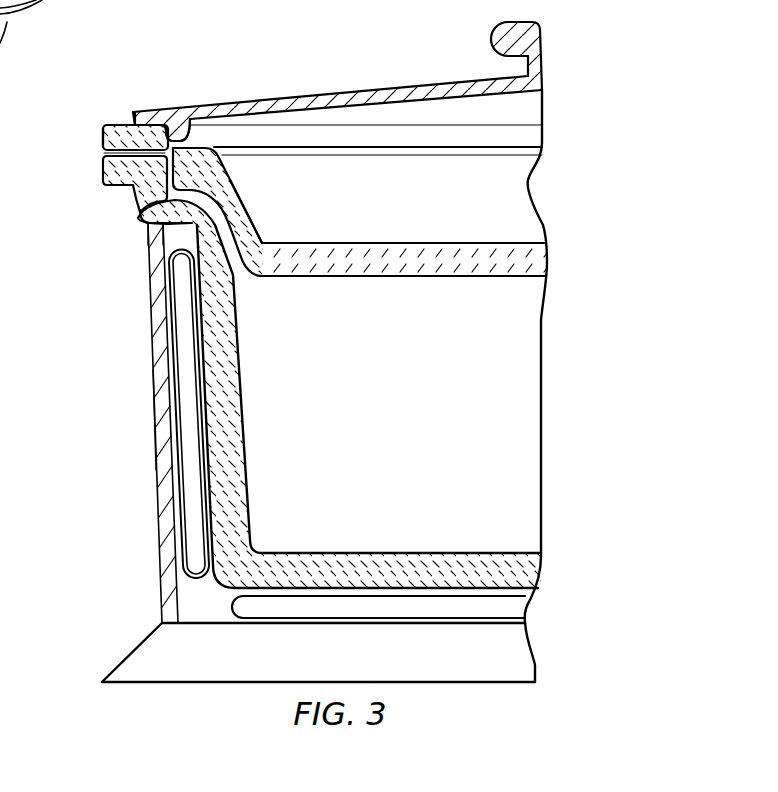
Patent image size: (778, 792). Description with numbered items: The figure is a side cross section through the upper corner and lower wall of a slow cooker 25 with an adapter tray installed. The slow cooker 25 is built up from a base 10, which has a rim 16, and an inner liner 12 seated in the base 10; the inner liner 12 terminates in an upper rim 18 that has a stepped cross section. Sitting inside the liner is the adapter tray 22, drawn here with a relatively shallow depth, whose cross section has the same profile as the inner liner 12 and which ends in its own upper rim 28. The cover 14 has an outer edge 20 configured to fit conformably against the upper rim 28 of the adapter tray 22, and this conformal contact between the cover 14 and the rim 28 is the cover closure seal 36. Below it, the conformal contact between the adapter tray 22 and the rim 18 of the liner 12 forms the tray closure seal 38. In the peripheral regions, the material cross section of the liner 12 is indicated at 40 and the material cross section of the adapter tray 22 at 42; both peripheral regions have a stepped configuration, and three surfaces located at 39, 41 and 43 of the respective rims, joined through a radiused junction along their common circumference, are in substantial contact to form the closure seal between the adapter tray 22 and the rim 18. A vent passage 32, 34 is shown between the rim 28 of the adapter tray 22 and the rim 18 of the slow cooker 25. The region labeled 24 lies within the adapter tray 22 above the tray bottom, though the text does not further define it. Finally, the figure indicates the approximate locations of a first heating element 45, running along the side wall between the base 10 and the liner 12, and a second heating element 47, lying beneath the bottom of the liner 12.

The base 10 is at (156, 479).
The inner liner 12 is at (241, 397).
The cover 14 is at (343, 92).
The rim 16 is at (152, 238).
The upper rim 18 is at (103, 171).
The outer edge 20 is at (126, 124).
The adapter tray 22 is at (388, 277).
The cavity 24 is at (386, 209).
The slow cooker 25 is at (86, 413).
The upper rim 28 is at (118, 125).
The vent passage 32 is at (103, 152).
The vent passage 34 is at (240, 268).
The cover closure seal 36 is at (172, 139).
The tray closure seal 38 is at (140, 207).
The surface 39 is at (103, 138).
The material cross section of liner 40 is at (147, 240).
The surface 41 is at (143, 214).
The material cross section of adapter tray 42 is at (210, 172).
The surface 43 is at (228, 214).
The first heating element 45 is at (196, 571).
The second heating element 47 is at (237, 599).